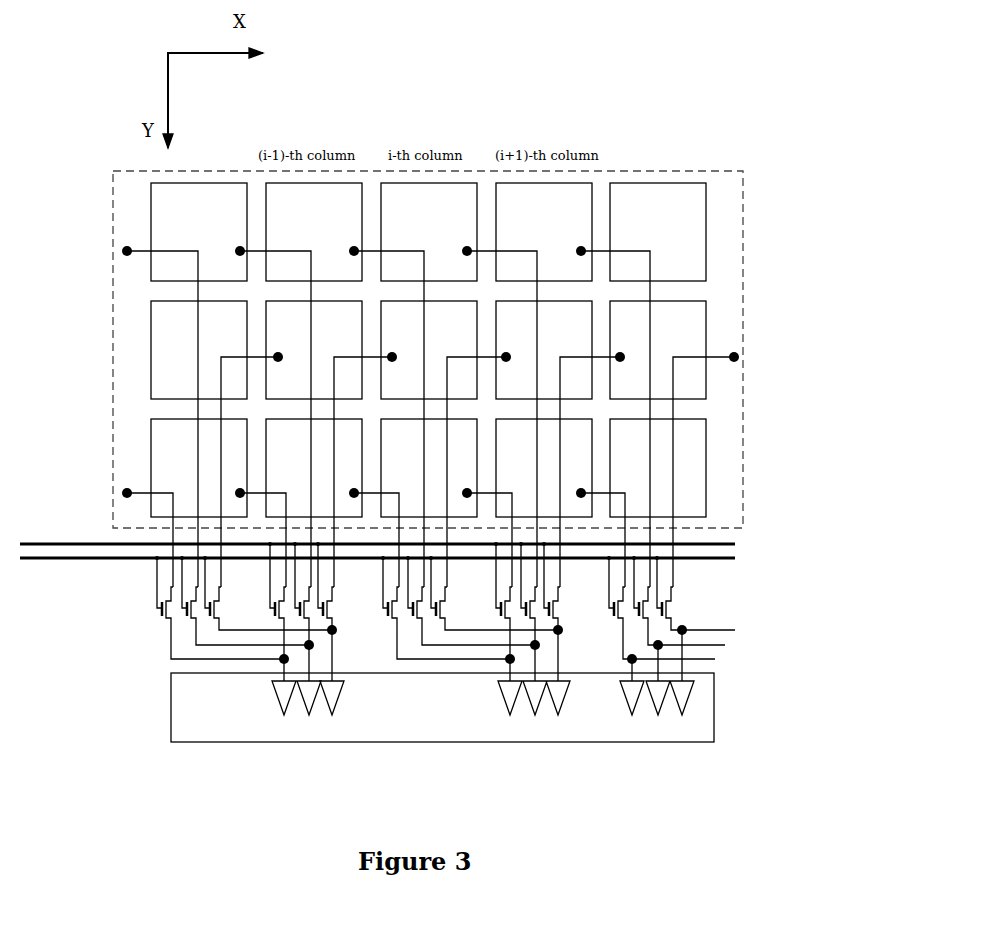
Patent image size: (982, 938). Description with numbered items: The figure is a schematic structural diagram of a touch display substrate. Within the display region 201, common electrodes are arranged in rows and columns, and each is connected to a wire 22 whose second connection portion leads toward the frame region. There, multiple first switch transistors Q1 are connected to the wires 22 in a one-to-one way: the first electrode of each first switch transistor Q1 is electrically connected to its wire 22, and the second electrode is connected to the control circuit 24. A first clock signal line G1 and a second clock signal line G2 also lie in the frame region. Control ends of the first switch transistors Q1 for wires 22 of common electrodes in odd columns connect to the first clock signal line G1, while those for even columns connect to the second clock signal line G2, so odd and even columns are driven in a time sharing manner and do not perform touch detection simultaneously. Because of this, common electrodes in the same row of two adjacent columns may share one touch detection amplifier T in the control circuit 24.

The display region 201 is at (625, 160).
The wire 22 is at (660, 320).
The first switch transistor Q1 is at (687, 600).
The touch detection amplifier T is at (343, 716).
The control circuit 24 is at (491, 752).
The first clock signal line G1 is at (62, 530).
The second clock signal line G2 is at (60, 574).